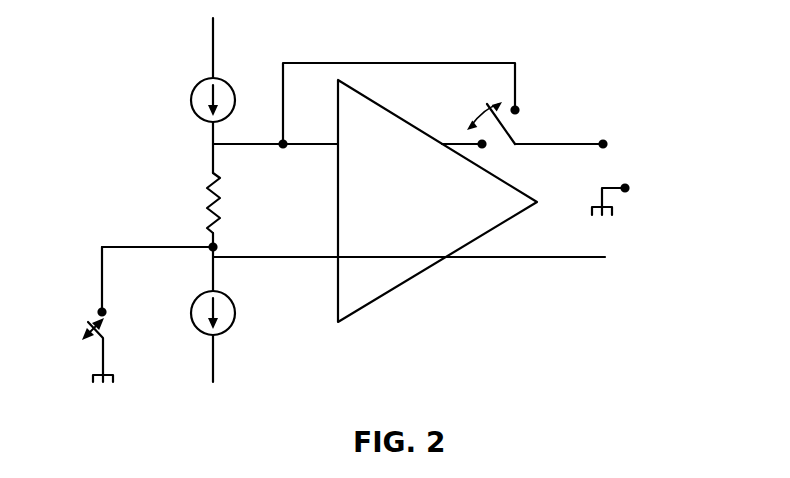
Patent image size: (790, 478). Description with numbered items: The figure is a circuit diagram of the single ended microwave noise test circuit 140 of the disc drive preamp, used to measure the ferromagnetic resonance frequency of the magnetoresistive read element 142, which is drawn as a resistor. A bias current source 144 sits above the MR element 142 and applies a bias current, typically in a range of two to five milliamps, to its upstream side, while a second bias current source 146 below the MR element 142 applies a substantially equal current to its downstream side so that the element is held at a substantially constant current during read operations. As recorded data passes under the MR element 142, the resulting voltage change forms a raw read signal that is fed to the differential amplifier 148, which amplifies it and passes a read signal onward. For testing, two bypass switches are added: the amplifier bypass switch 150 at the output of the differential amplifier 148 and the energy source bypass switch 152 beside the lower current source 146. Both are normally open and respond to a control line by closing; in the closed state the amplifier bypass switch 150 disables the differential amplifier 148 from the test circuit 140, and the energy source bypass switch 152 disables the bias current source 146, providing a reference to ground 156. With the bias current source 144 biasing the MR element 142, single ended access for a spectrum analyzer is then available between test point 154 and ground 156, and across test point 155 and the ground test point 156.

The single ended microwave noise test circuit 140 is at (461, 47).
The magnetoresistive read (MR) element 142 is at (196, 194).
The bias current source 144 is at (195, 84).
The bias current source 146 is at (233, 325).
The differential amplifier 148 is at (398, 285).
The amplifier bypass switch 150 is at (527, 122).
The energy source bypass switch 152 is at (122, 324).
The test point 154 is at (604, 141).
The test point 155 is at (483, 147).
The ground 156 is at (626, 191).